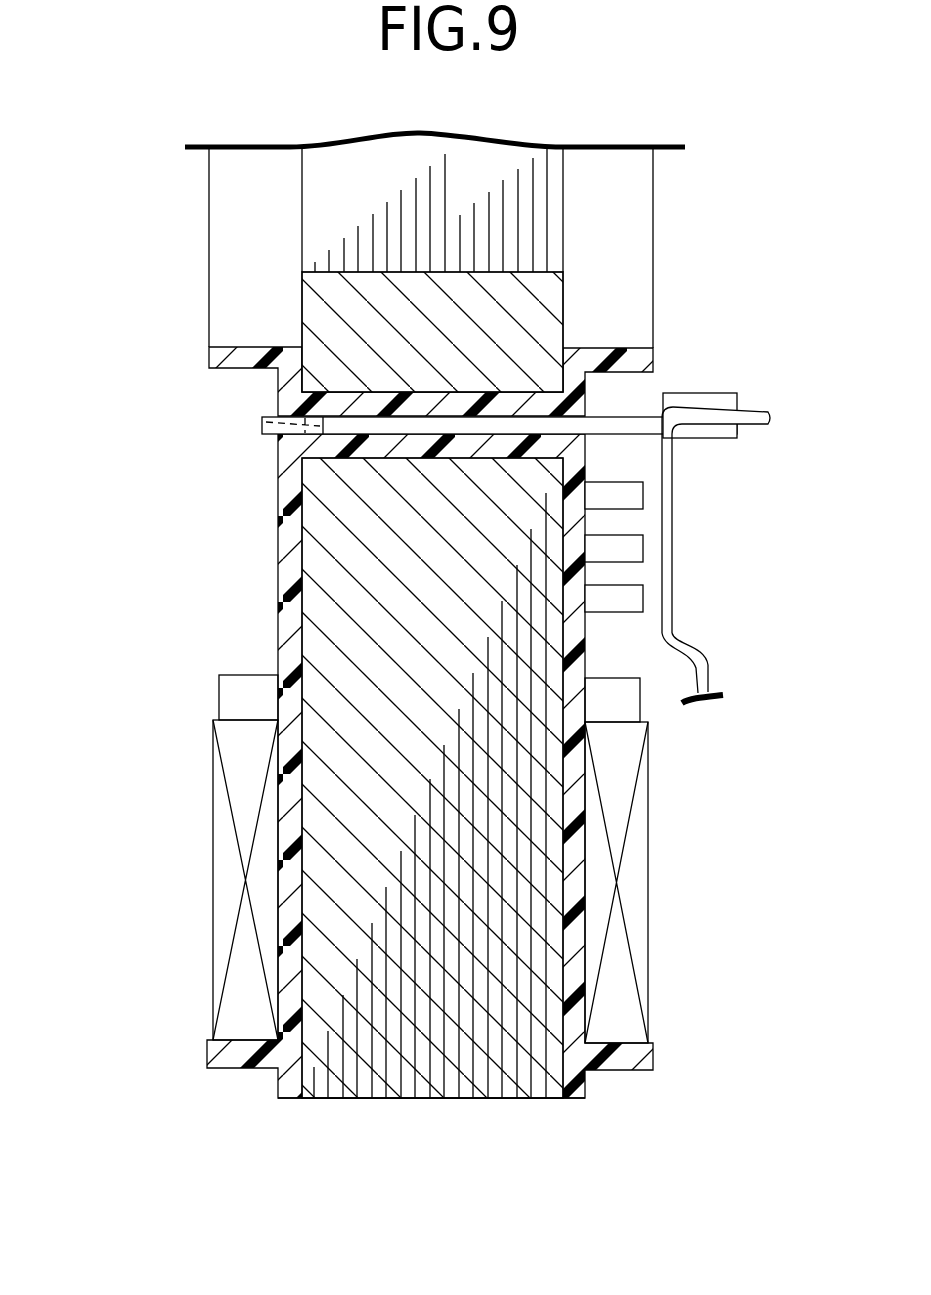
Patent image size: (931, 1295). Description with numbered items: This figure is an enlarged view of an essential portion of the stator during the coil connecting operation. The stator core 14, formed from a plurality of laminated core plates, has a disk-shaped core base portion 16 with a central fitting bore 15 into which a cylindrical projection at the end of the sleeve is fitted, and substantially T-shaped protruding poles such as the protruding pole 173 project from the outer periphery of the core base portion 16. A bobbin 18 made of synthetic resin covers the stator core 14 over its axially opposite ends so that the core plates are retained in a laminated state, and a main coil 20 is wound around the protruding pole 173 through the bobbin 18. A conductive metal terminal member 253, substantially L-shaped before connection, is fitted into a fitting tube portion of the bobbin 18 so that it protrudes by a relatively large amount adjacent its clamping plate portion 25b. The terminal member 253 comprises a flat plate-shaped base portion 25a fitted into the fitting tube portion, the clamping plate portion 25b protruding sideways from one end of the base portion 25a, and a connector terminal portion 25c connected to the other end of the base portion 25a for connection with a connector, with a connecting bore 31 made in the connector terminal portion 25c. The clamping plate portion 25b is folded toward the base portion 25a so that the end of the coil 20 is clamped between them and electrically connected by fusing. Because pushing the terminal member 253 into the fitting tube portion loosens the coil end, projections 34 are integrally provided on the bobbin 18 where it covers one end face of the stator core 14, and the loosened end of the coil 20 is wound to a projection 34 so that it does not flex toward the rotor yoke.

The stator core 14 is at (567, 316).
The fitting bore 15 is at (495, 273).
The core base portion 16 is at (306, 296).
The bobbin 18 is at (288, 880).
The main coil 20 is at (685, 648).
The base portion 25a is at (414, 427).
The clamping plate portion 25b is at (698, 393).
The connector terminal portion 25c is at (262, 431).
The terminal member 253 is at (447, 412).
The connecting bore 31 is at (262, 416).
The projection 34 is at (625, 597).
The protruding pole 173 is at (423, 1098).